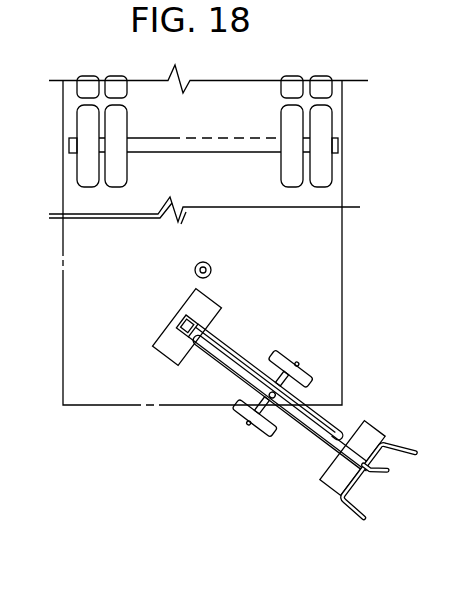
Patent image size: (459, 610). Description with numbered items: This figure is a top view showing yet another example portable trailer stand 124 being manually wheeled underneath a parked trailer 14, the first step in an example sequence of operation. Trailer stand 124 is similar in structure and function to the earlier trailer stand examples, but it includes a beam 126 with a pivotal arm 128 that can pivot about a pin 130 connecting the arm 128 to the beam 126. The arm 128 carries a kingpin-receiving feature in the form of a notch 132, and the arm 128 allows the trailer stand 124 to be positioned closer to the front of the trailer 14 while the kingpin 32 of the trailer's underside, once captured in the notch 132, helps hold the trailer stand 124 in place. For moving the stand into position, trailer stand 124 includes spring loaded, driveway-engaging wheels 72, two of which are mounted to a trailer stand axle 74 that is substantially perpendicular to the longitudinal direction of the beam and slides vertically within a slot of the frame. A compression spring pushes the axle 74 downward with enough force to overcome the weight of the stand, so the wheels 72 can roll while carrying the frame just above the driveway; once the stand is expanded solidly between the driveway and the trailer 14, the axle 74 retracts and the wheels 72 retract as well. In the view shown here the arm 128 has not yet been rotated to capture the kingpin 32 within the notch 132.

The trailer 14 is at (63, 320).
The kingpin 32 is at (203, 262).
The wheels 72 is at (307, 377).
The trailer stand axle 74 is at (274, 424).
The portable trailer stand 124 is at (153, 296).
The beam 126 is at (207, 357).
The pivotal arm 128 is at (238, 360).
The pin 130 is at (252, 357).
The notch 132 is at (342, 443).